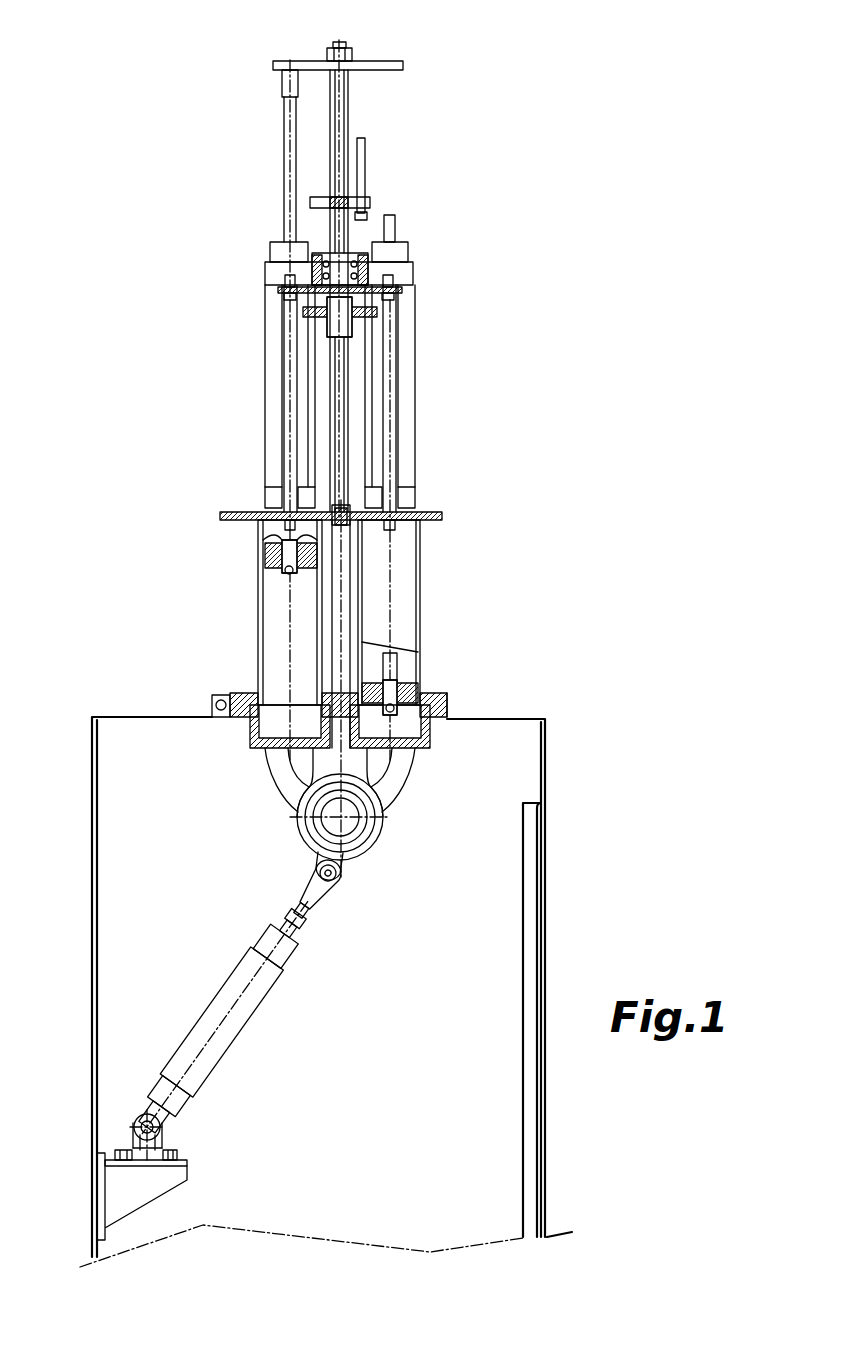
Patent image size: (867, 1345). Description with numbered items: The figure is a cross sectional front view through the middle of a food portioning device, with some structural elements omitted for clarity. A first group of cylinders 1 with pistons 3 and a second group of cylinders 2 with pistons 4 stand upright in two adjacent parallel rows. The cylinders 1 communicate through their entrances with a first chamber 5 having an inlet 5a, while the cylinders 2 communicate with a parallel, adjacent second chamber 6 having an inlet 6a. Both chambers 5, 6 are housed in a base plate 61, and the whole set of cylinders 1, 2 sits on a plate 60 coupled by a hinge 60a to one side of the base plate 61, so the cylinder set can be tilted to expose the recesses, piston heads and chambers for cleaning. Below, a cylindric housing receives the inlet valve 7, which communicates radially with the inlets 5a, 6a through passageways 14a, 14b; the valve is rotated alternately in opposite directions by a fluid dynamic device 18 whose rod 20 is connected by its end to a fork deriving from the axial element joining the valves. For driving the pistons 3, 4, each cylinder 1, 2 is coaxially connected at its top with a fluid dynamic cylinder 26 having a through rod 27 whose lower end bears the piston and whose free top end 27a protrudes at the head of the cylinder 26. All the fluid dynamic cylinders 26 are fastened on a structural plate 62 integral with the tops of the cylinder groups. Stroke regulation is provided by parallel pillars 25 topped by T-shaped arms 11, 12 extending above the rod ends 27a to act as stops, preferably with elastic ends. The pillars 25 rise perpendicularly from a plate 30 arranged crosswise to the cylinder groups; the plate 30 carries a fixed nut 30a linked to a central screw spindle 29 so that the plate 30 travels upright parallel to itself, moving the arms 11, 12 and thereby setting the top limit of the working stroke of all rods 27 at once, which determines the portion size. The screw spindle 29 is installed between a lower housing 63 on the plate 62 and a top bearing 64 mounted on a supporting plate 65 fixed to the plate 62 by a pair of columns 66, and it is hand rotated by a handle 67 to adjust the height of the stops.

The cylinder of the first group 1 is at (270, 607).
The cylinder of the second group 2 is at (413, 588).
The piston 3 is at (260, 553).
The piston 4 is at (420, 683).
The first chamber 5 is at (262, 730).
The second chamber 6 is at (415, 730).
The inlet of the first chamber 5a is at (282, 762).
The inlet of the second chamber 6a is at (396, 765).
The inlet valve 7 is at (388, 845).
The T-shaped arm 11 is at (280, 62).
The T-shaped arm 12 is at (393, 63).
The passageway 14a is at (283, 787).
The passageway 14b is at (398, 790).
The fluid dynamic device 18 is at (257, 1010).
The rod 20 is at (308, 925).
The pillar 25 is at (345, 115).
The fluid dynamic cylinder 26 is at (270, 430).
The through rod 27 is at (285, 120).
The free top end of the rod 27a is at (285, 83).
The central screw spindle 29 is at (335, 372).
The plate 30 is at (400, 307).
The nut 30a is at (352, 325).
The plate 60 is at (244, 697).
The hinge 60a is at (216, 702).
The base plate 61 is at (445, 713).
The structural plate 62 is at (433, 512).
The lower housing 63 is at (350, 525).
The top bearing 64 is at (327, 253).
The supporting plate 65 is at (300, 292).
The column 66 is at (285, 347).
The handle 67 is at (365, 163).